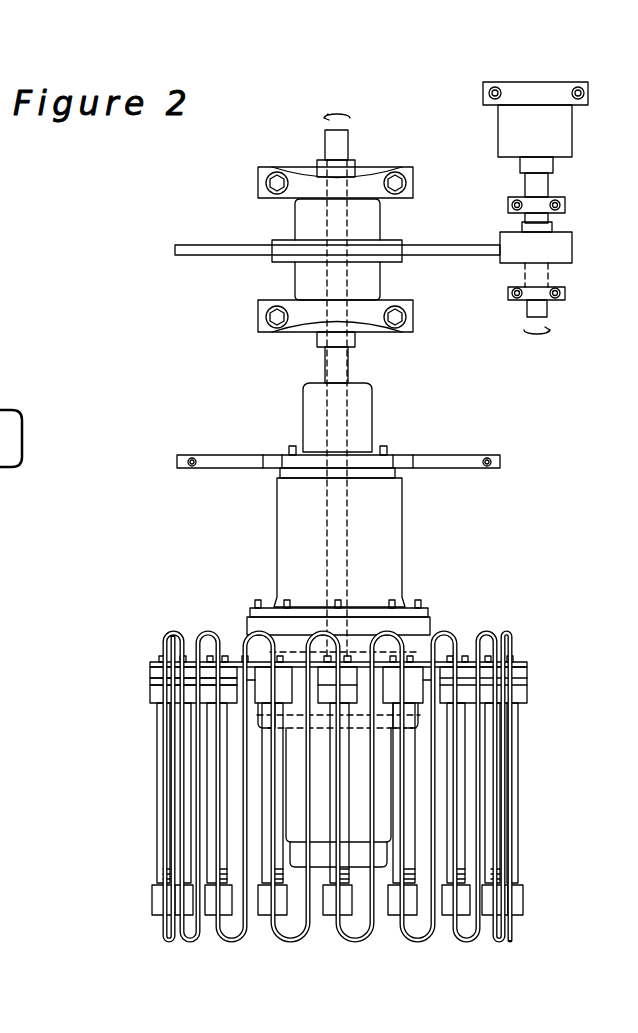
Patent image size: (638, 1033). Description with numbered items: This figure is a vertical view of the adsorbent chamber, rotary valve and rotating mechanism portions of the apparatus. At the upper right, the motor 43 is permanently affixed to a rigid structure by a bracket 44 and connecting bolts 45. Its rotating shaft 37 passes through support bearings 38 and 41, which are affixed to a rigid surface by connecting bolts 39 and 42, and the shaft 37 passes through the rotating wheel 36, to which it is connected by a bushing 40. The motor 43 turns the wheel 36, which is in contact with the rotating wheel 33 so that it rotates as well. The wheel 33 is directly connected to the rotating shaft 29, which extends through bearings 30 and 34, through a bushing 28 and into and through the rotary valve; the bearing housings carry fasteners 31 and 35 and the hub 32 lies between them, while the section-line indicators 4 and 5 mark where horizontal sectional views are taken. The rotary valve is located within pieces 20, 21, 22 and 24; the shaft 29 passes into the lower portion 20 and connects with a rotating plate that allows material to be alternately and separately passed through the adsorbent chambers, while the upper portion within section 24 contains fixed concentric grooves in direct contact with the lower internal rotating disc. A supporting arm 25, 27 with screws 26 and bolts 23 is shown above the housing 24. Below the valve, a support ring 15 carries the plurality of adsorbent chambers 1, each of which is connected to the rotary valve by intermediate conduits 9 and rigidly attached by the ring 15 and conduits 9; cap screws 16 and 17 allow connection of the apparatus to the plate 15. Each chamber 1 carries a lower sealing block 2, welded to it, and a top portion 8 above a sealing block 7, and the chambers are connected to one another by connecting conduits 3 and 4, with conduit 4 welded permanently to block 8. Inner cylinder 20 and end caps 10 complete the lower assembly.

The adsorbent chamber 1 is at (181, 796).
The sealing block 2 is at (160, 700).
The connecting conduit 3 is at (140, 625).
The connecting conduit 4 is at (193, 197).
The section line 5 is at (225, 503).
The sealing block 7 is at (150, 681).
The top portion of adsorbent chamber 8 is at (150, 669).
The intermediate conduit 9 is at (286, 683).
The end cap 10 is at (512, 900).
The support ring 15 is at (528, 665).
The cap screw 16 is at (350, 656).
The cap screw 17 is at (328, 656).
The lower portion of rotary valve 20 is at (357, 732).
The rotary valve piece 21 is at (250, 620).
The rotary valve piece 22 is at (428, 609).
The bolts 23 is at (288, 600).
The upper portion of rotary valve 24 is at (277, 533).
The arm 25 is at (206, 455).
The screws 26 is at (289, 448).
The arm end 27 is at (490, 457).
The bushing 28 is at (372, 401).
The rotating shaft 29 is at (349, 138).
The bearing 30 is at (271, 301).
The clamp bolt 31 is at (406, 316).
The hub 32 is at (381, 226).
The rotating wheel 33 is at (262, 245).
The bearing 34 is at (286, 168).
The clamp bolt 35 is at (263, 183).
The rotating wheel 36 is at (572, 252).
The rotating shaft 37 is at (525, 184).
The support bearing 38 is at (508, 292).
The connecting bolt 39 is at (567, 293).
The bushing 40 is at (522, 228).
The support bearing 41 is at (562, 204).
The connecting bolt 42 is at (512, 203).
The motor 43 is at (498, 122).
The bracket 44 is at (483, 86).
The connecting bolt 45 is at (581, 98).